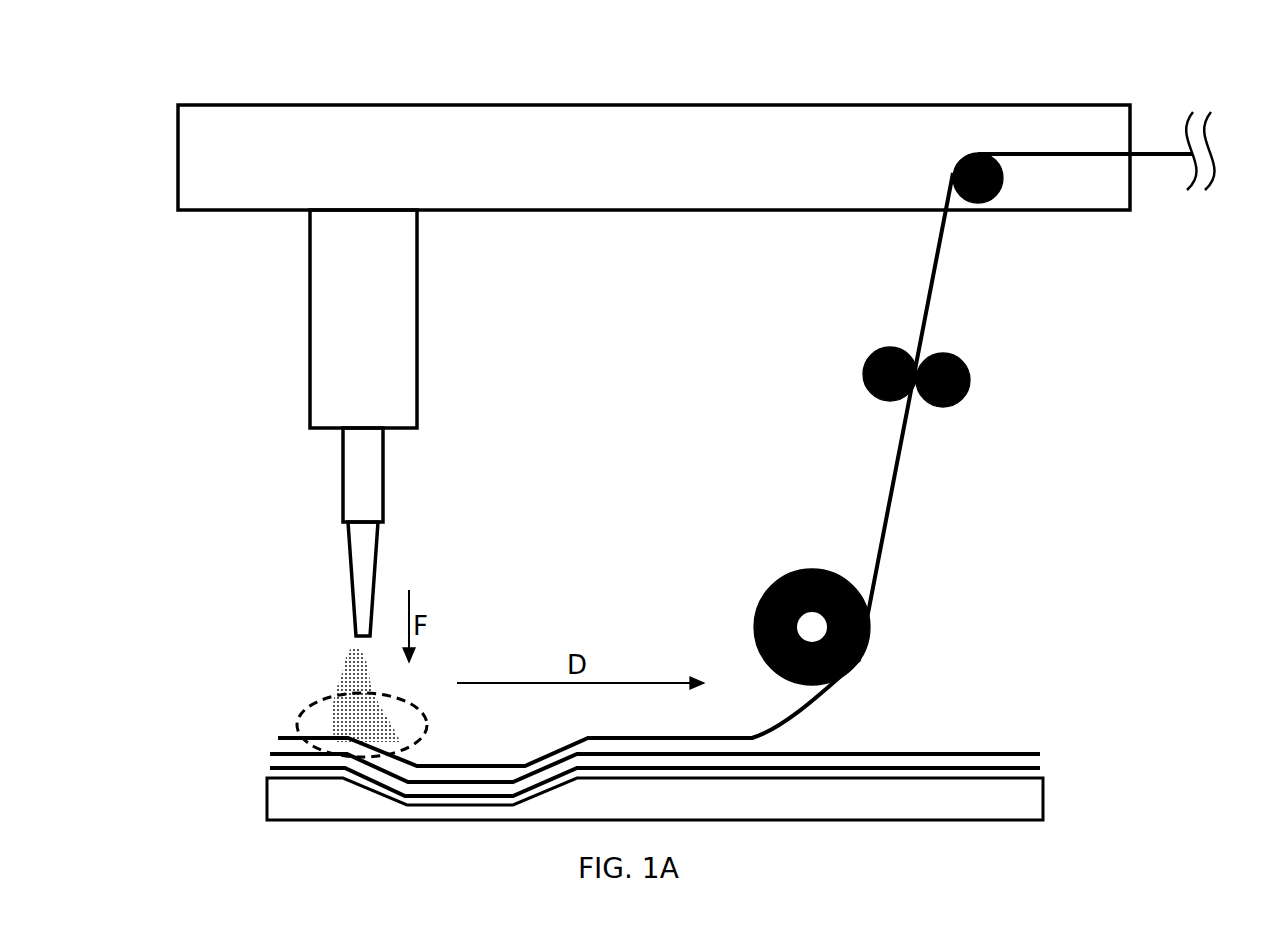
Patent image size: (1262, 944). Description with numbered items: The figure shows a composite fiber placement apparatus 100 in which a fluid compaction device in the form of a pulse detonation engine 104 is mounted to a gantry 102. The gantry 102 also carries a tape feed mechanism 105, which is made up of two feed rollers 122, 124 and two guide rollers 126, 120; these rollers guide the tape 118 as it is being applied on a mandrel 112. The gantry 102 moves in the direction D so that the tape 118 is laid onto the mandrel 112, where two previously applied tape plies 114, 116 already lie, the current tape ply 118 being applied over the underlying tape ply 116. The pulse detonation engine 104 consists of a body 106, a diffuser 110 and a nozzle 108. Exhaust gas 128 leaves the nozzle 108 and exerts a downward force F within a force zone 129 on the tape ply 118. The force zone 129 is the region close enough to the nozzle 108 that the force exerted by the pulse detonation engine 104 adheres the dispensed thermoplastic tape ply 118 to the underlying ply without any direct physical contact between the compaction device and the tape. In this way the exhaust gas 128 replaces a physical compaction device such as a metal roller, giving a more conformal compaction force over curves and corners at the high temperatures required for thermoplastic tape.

The composite fiber placement apparatus 100 is at (265, 72).
The gantry 102 is at (548, 135).
The pulse detonation engine 104 is at (421, 339).
The body 106 is at (340, 332).
The nozzle 108 is at (363, 598).
The diffuser 110 is at (363, 480).
The mandrel 112 is at (852, 805).
The tape ply 114 is at (1040, 767).
The tape ply 116 is at (988, 752).
The tape 118 is at (900, 470).
The guide roller 120 is at (760, 595).
The feed roller 122 is at (883, 348).
The feed roller 124 is at (963, 360).
The guide roller 126 is at (957, 163).
The tape feed mechanism 105 is at (962, 321).
The exhaust gas 128 is at (358, 670).
The force zone 129 is at (317, 705).